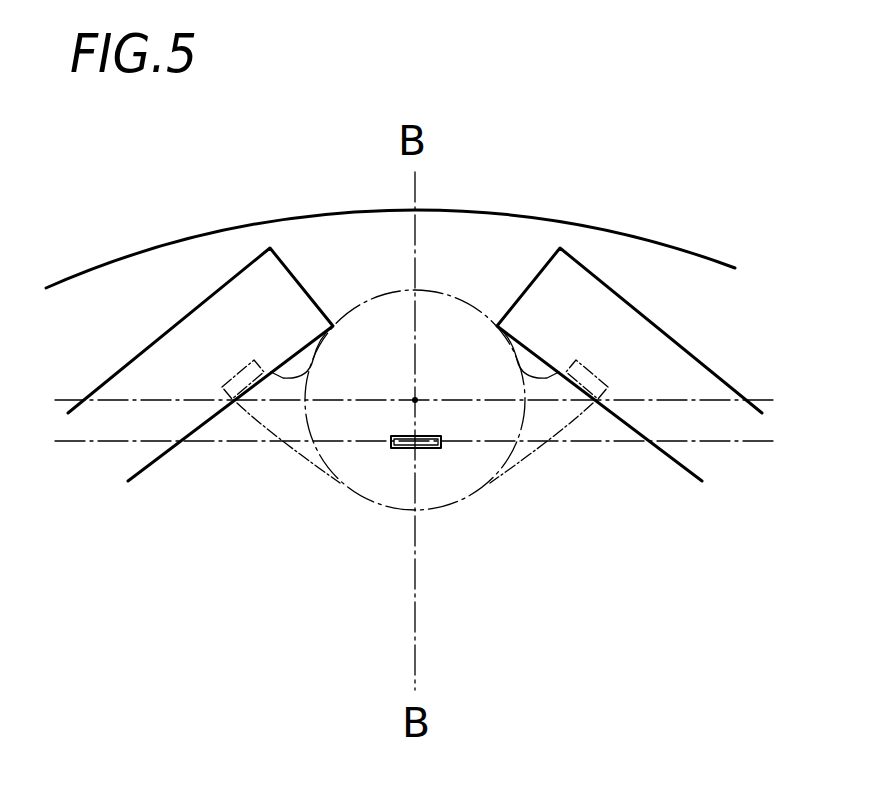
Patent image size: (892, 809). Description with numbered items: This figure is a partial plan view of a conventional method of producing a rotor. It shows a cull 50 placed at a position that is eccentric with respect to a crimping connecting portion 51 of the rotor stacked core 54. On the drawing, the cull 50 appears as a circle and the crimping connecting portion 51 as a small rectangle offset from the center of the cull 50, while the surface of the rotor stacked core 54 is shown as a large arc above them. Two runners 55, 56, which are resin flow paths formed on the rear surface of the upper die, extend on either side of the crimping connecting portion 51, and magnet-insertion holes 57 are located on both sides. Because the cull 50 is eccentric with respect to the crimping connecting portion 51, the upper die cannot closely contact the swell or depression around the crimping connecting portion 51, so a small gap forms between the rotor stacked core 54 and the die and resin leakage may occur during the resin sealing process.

The cull 50 is at (447, 507).
The crimping connecting portion 51 is at (405, 447).
The rotor stacked core 54 is at (590, 243).
The runner 55 is at (273, 423).
The runner 56 is at (547, 430).
The magnet-insertion hole 57 is at (183, 347).